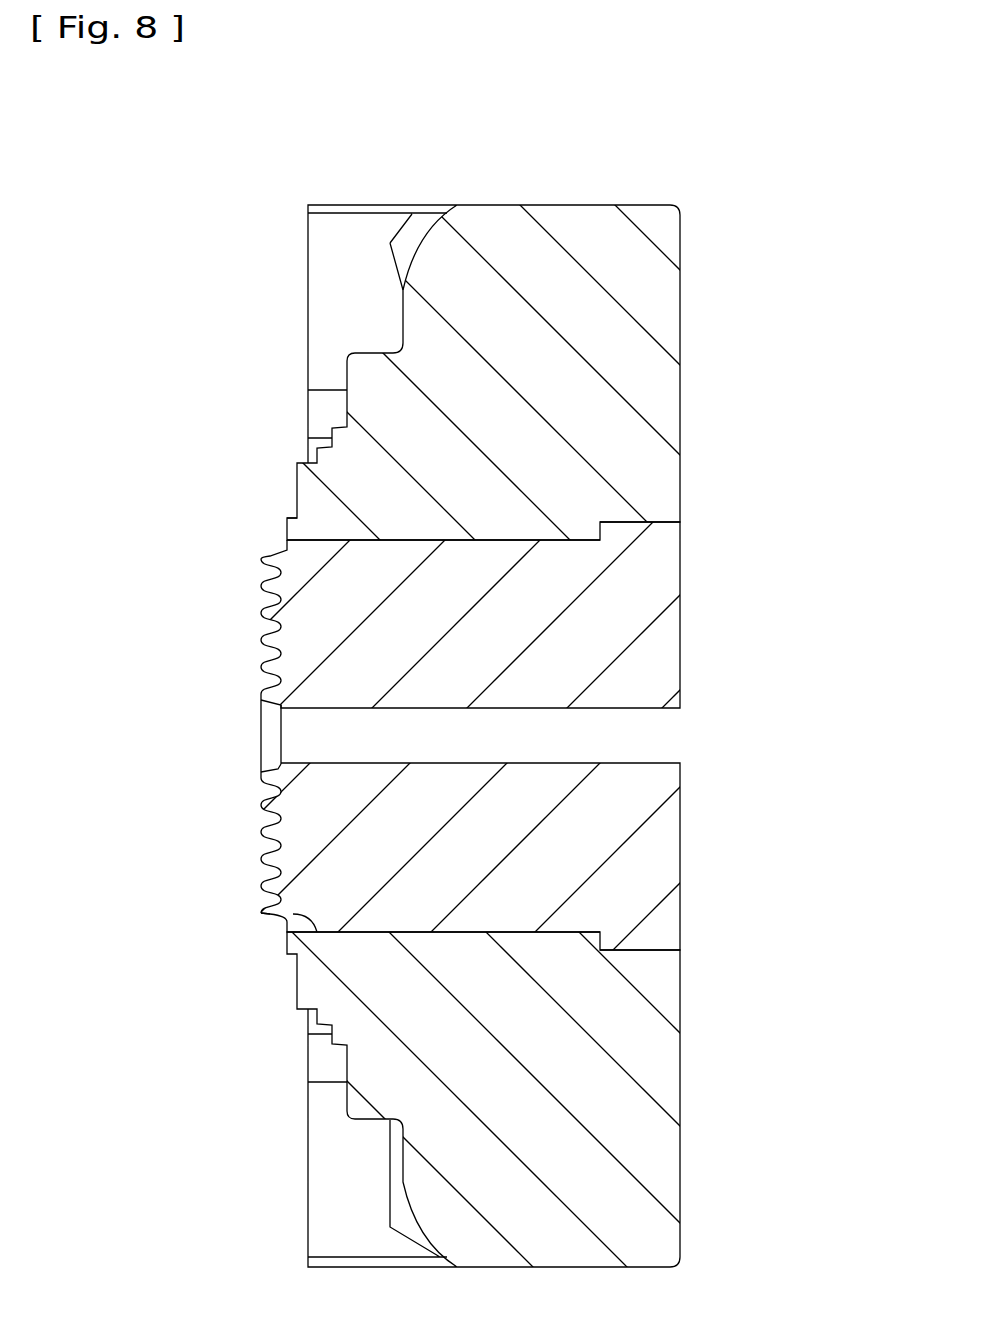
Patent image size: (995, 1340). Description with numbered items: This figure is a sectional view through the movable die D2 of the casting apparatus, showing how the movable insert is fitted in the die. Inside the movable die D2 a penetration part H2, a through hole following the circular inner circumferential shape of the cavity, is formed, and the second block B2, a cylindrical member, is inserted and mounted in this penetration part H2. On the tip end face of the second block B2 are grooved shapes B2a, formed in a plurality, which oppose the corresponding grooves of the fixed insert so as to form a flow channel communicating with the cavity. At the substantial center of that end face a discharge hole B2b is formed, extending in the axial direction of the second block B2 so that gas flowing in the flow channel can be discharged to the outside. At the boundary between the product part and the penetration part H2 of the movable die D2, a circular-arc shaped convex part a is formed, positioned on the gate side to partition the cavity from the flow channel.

The movable die D2 is at (683, 372).
The second block B2 is at (660, 665).
The grooved shapes B2a is at (262, 627).
The discharge hole B2b is at (294, 758).
The penetration part H2 is at (261, 912).
The convex part a is at (285, 530).